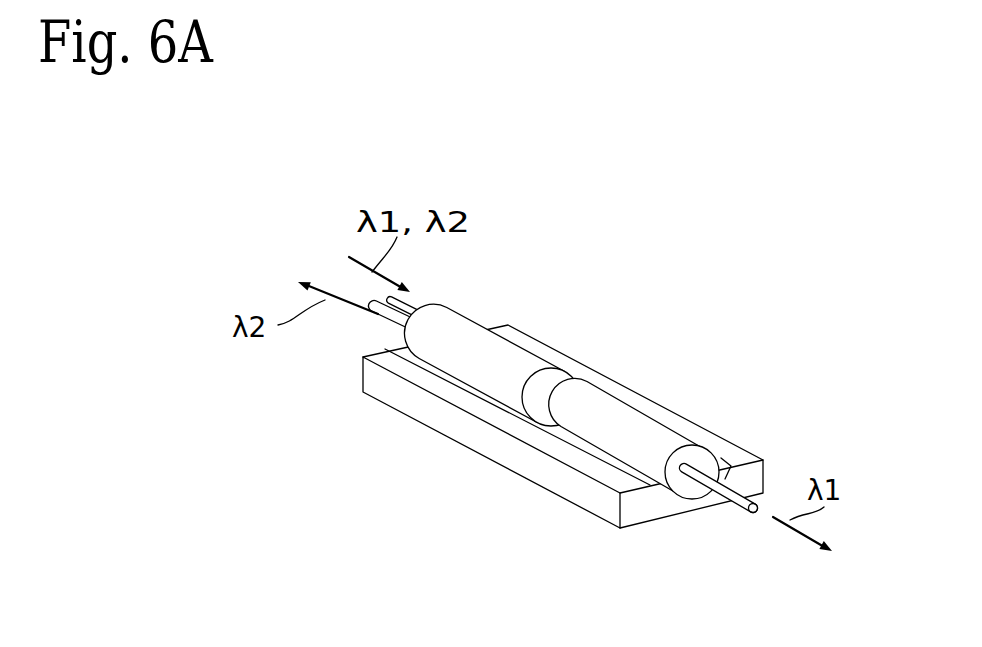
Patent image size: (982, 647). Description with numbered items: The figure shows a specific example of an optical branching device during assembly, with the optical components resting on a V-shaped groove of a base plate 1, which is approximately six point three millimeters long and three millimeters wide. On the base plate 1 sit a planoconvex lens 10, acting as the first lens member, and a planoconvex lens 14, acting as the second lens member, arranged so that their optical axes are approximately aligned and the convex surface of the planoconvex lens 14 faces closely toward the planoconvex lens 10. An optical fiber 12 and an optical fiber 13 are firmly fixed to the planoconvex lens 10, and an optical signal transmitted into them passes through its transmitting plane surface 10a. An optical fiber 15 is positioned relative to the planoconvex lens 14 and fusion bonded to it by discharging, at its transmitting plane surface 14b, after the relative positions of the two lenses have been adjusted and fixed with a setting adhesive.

The base plate 1 is at (524, 338).
The planoconvex lens 10 is at (470, 310).
The transmitting plane surface 10a is at (556, 378).
The optical fiber 12 is at (412, 306).
The optical fiber 13 is at (387, 318).
The planoconvex lens 14 is at (684, 429).
The transmitting plane surface 14b is at (707, 461).
The optical fiber 15 is at (719, 485).